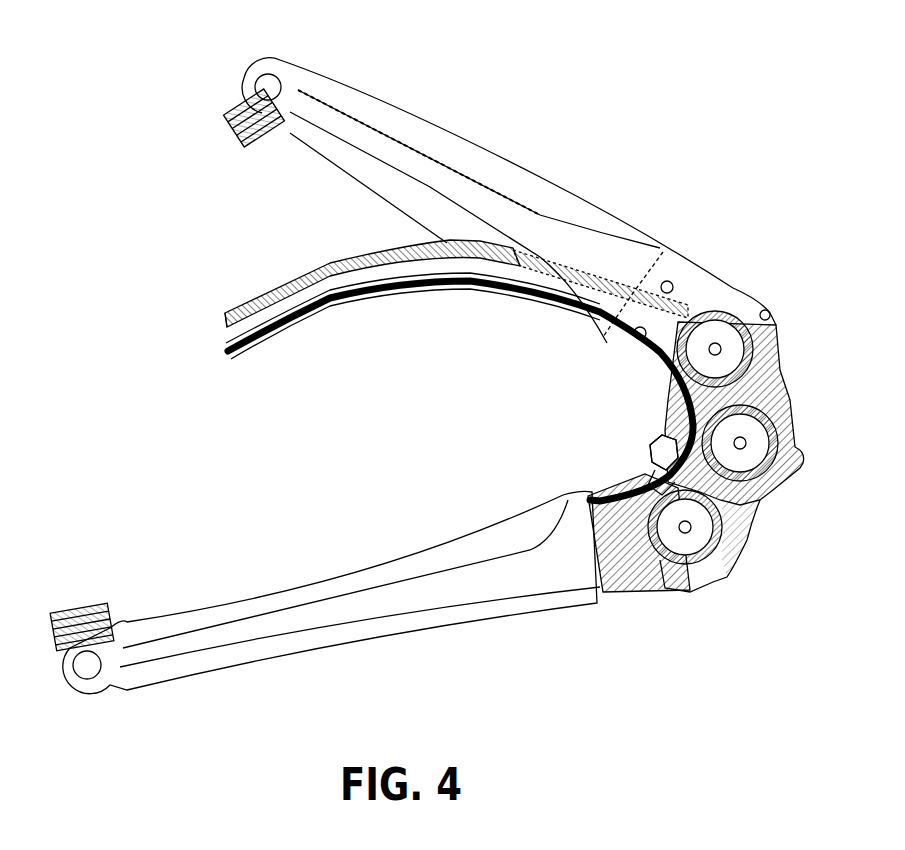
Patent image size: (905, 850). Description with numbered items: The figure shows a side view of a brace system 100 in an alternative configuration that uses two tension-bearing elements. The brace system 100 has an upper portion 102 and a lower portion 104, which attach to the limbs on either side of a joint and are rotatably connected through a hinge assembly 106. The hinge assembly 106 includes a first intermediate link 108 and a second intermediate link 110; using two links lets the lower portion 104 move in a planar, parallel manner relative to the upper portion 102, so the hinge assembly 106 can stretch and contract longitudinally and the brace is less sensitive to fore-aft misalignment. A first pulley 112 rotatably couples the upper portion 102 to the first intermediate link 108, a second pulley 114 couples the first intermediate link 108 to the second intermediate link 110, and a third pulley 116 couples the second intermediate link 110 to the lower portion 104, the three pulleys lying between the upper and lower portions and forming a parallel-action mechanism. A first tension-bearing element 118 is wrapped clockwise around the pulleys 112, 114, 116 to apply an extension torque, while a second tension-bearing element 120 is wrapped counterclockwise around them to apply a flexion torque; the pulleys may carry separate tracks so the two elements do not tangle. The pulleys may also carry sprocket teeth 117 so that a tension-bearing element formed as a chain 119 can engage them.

The brace system 100 is at (652, 86).
The upper portion 102 is at (262, 62).
The lower portion 104 is at (160, 625).
The hinge assembly 106 is at (657, 440).
The first intermediate link 108 is at (767, 372).
The second intermediate link 110 is at (758, 490).
The first pulley 112 is at (705, 337).
The second pulley 114 is at (752, 432).
The third pulley 116 is at (692, 545).
The sprocket teeth 117 is at (687, 325).
The first tension-bearing element 118 is at (222, 315).
The chain 119 is at (303, 262).
The second tension-bearing element 120 is at (226, 350).